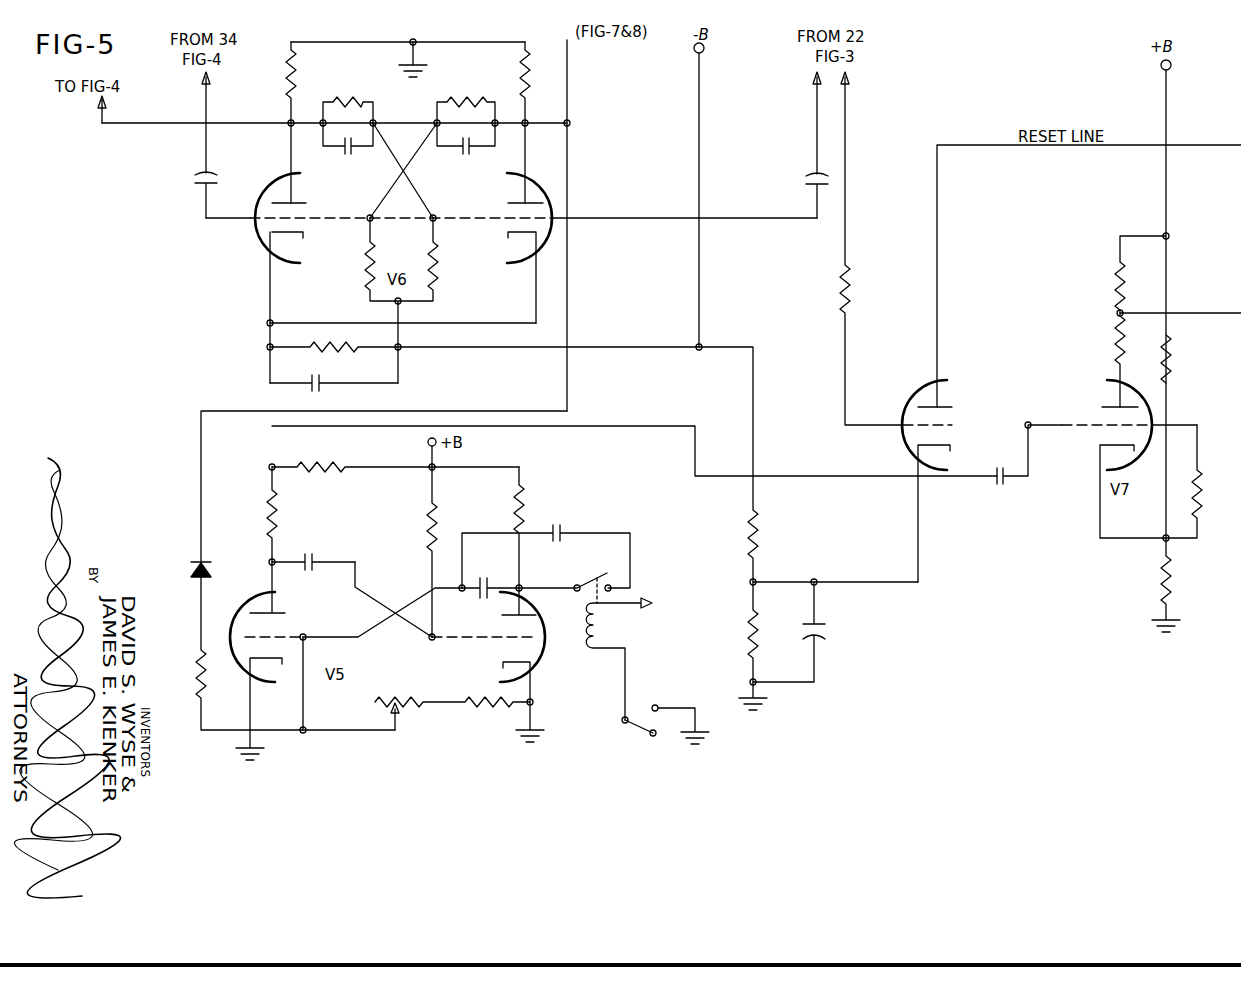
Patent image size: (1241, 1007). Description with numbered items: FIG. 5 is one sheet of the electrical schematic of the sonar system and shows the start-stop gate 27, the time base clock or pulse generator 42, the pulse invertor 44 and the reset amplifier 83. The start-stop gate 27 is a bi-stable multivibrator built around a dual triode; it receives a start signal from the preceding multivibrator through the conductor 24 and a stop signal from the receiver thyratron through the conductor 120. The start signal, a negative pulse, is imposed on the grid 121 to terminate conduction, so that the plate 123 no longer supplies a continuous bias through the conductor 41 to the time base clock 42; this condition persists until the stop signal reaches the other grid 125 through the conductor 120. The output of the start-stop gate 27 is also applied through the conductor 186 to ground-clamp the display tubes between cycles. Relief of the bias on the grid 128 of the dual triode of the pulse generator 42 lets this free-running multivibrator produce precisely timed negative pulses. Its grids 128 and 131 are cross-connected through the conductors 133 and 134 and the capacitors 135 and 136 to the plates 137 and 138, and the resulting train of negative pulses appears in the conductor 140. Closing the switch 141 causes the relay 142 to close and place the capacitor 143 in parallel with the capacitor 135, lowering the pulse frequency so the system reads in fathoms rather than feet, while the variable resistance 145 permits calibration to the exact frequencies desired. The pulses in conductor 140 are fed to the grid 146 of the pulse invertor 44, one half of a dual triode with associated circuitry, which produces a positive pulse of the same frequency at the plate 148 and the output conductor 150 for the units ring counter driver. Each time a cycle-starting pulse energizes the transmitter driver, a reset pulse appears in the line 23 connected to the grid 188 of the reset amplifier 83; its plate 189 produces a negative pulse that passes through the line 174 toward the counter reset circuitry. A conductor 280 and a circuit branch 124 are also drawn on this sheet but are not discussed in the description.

The output conductor to FIG. 4 280 is at (165, 126).
The conductor 120 is at (204, 166).
The grid 125 is at (305, 213).
The plate 123 is at (510, 200).
The grid 121 is at (505, 222).
The conductor 186 is at (570, 89).
The conductor 24 is at (816, 132).
The line 23 is at (845, 231).
The line 174 is at (937, 239).
The start-stop gate 27 is at (265, 302).
The conductor 41 is at (567, 298).
The conductor 140 is at (603, 434).
The capacitor 143 is at (560, 525).
The capacitor 136 is at (331, 559).
The plate 138 is at (277, 609).
The grid 128 is at (283, 633).
The conductor 134 is at (403, 601).
The conductor 133 is at (350, 641).
The capacitor 135 is at (485, 576).
The plate 137 is at (523, 601).
The grid 131 is at (515, 633).
The variable resistance 145 is at (398, 700).
The diode and resistor branch 124 is at (222, 735).
The time base clock 42 is at (345, 735).
The relay 142 is at (608, 611).
The switch 141 is at (641, 736).
The reset amplifier 83 is at (907, 403).
The plate 189 is at (950, 403).
The grid 188 is at (949, 432).
The plate 148 is at (1100, 406).
The grid 146 is at (1069, 430).
The pulse invertor 44 is at (1090, 484).
The output conductor 150 is at (1203, 318).